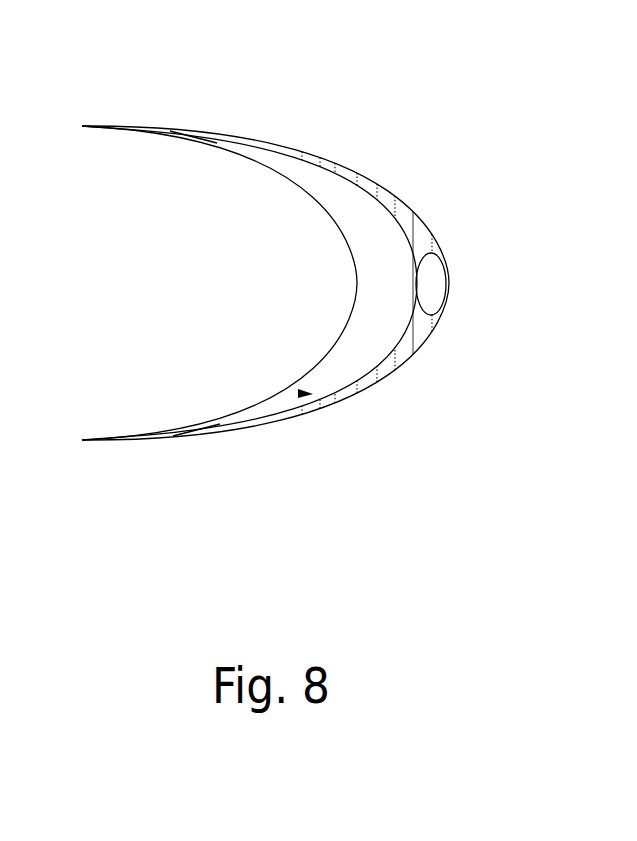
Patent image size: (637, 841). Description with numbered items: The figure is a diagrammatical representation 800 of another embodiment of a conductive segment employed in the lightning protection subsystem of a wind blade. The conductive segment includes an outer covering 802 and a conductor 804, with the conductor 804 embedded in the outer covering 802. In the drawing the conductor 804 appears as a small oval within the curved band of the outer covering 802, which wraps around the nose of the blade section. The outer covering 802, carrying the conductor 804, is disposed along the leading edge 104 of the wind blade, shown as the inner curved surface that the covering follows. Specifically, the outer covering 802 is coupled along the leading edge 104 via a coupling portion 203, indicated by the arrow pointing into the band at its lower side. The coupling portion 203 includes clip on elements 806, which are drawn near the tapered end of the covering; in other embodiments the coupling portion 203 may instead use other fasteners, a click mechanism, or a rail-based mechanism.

The diagrammatical representation 800 is at (502, 145).
The outer covering 802 is at (336, 163).
The conductor 804 is at (443, 273).
The clip on elements 806 is at (192, 128).
The leading edge 104 is at (357, 274).
The coupling portion 203 is at (299, 393).